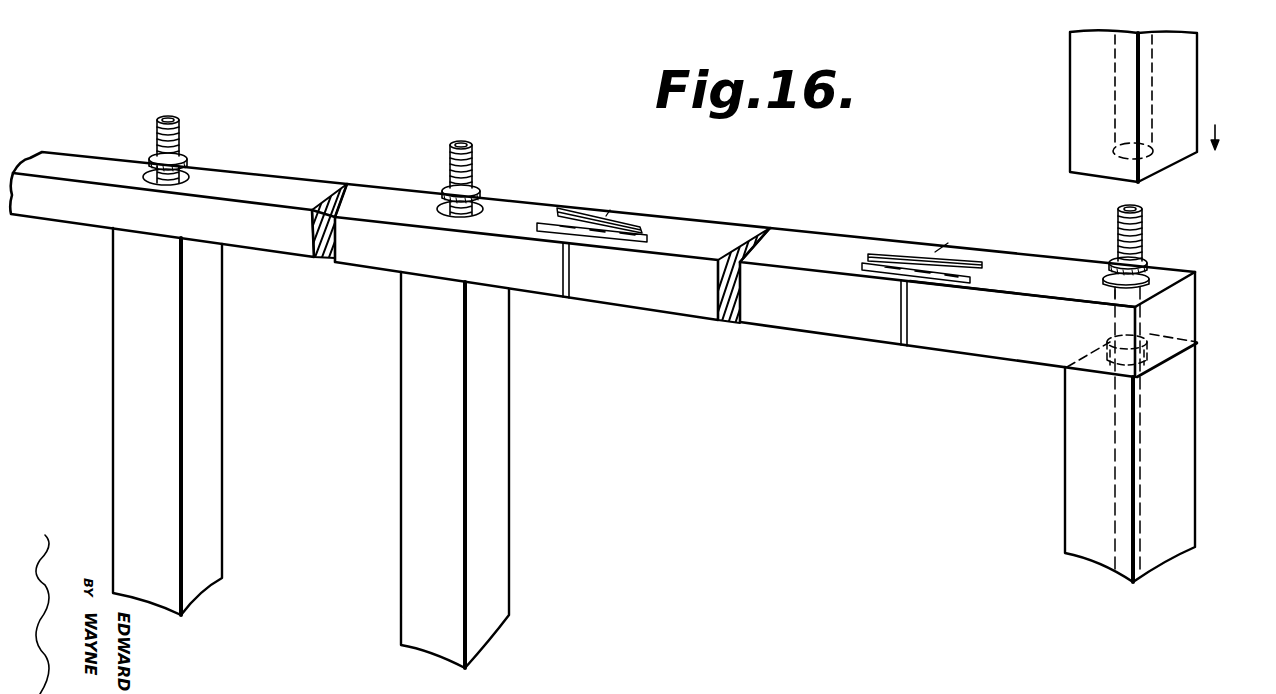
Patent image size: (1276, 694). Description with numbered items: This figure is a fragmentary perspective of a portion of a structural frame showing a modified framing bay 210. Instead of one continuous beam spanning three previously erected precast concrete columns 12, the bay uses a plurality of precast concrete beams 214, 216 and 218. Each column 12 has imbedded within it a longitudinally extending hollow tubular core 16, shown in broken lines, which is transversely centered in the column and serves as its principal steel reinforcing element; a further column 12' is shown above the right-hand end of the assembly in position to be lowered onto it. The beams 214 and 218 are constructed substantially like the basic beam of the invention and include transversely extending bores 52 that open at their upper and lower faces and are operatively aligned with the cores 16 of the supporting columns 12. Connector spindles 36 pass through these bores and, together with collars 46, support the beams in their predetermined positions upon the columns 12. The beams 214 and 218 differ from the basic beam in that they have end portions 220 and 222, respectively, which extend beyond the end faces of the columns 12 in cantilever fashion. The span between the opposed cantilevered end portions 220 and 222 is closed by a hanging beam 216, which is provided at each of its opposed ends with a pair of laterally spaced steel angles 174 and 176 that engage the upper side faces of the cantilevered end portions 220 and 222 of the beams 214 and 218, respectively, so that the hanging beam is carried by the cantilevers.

The precast concrete column 12 is at (673, 448).
The column 12' is at (1157, 106).
The hollow tubular core 16 is at (1140, 442).
The connector spindle 36 is at (180, 141).
The collar 46 is at (1147, 263).
The bore 52 is at (193, 173).
The steel angle 174 is at (580, 210).
The steel angle 176 is at (545, 243).
The framing bay 210 is at (858, 226).
The precast concrete beam 214 is at (313, 185).
The hanging beam 216 is at (797, 320).
The precast concrete beam 218 is at (1043, 255).
The cantilevered end portion 220 is at (533, 287).
The cantilevered end portion 222 is at (963, 347).